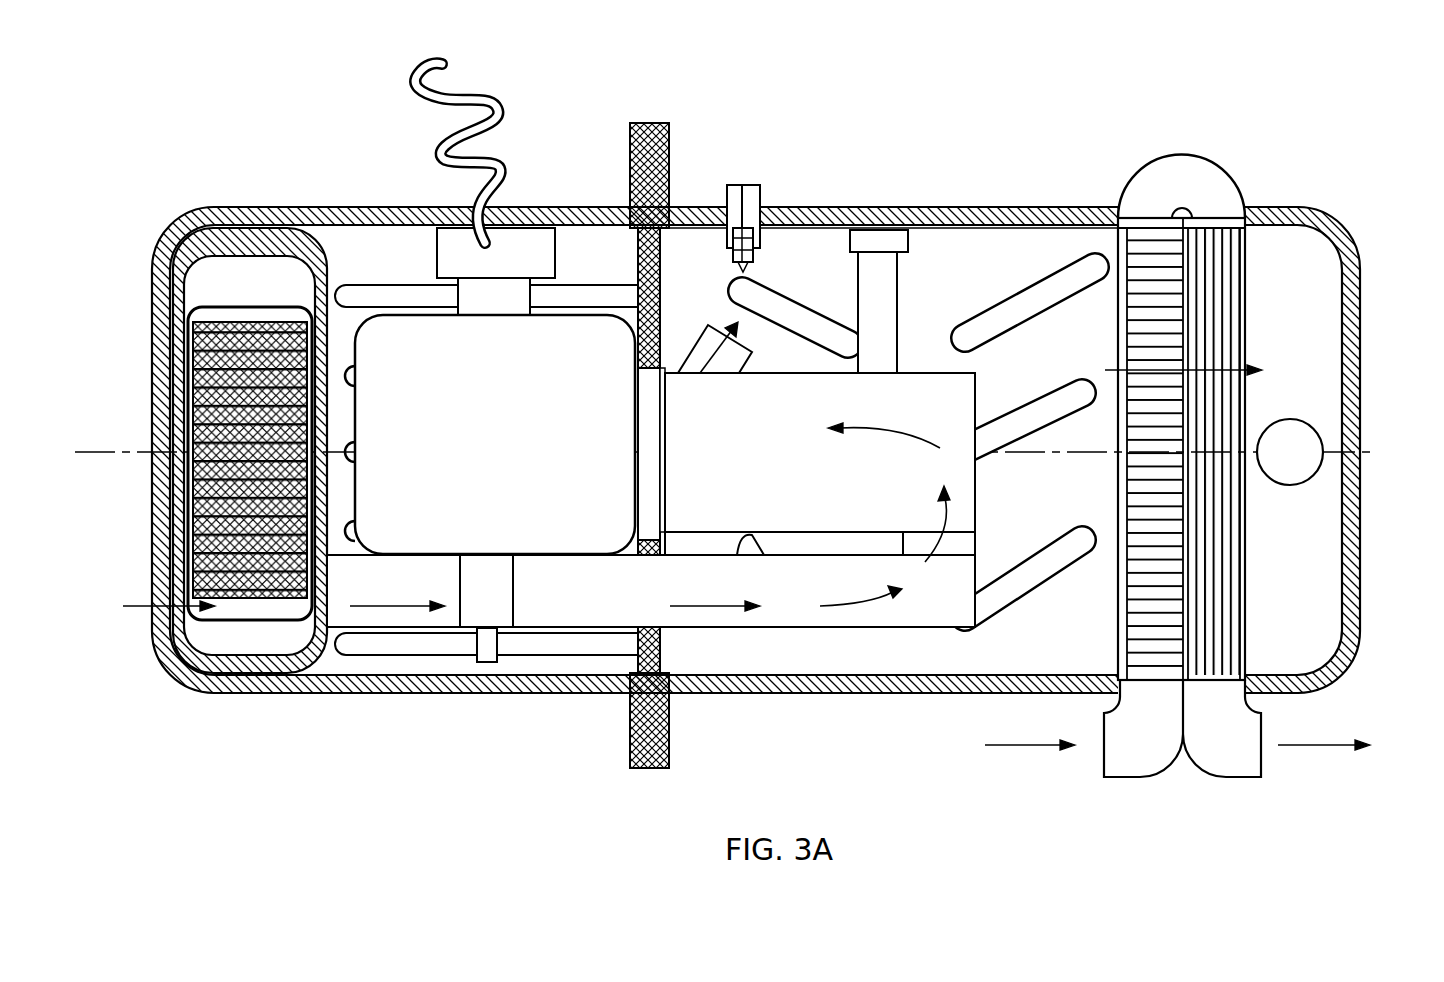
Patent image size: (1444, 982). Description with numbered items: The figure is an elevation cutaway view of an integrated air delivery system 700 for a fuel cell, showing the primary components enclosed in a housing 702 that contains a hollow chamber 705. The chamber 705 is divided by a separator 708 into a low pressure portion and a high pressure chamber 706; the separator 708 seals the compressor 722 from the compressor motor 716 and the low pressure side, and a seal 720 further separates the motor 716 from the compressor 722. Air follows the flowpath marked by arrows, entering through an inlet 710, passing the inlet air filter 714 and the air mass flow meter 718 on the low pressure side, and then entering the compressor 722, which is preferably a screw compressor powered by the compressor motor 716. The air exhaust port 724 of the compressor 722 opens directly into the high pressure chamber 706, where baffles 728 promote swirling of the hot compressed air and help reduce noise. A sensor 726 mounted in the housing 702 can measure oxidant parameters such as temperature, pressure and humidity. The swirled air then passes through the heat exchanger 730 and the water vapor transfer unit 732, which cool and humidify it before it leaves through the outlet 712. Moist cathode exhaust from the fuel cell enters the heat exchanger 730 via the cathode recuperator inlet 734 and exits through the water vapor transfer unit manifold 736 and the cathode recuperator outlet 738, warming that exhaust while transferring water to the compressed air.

The air delivery system 700 is at (1088, 116).
The housing 702 is at (166, 318).
The chamber 705 is at (930, 250).
The high pressure chamber 706 is at (1326, 350).
The separator 708 is at (648, 770).
The inlet 710 is at (162, 528).
The outlet 712 is at (1290, 486).
The inlet air filter 714 is at (190, 422).
The compressor motor 716 is at (397, 328).
The air mass flow meter 718 is at (486, 568).
The seal 720 is at (655, 480).
The compressor 722 is at (905, 385).
The air exhaust port 724 is at (712, 332).
The sensor 726 is at (749, 187).
The baffles 728 is at (793, 305).
The heat exchanger 730 is at (1138, 333).
The water vapor transfer unit 732 is at (1228, 308).
The cathode recuperator inlet 734 is at (1103, 762).
The water vapor transfer unit manifold 736 is at (1212, 768).
The cathode recuperator outlet 738 is at (1262, 762).